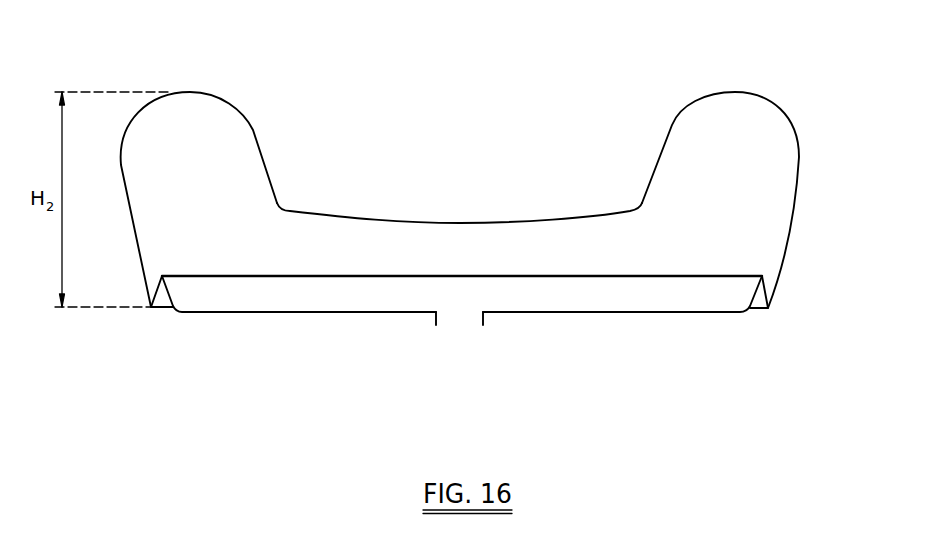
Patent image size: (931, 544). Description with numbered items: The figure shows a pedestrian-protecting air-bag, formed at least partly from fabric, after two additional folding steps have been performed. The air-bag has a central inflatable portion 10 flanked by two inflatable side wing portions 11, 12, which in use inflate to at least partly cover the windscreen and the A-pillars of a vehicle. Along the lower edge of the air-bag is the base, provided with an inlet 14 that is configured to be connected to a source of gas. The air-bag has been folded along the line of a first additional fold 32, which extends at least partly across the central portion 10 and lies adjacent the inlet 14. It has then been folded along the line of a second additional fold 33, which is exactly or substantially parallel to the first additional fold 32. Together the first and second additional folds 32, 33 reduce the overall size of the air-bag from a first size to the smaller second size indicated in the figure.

The central inflatable portion 10 is at (496, 241).
The inflatable side wing portion 11 is at (152, 125).
The inflatable side wing portion 12 is at (755, 137).
The inlet 14 is at (455, 310).
The first additional fold 32 is at (163, 310).
The second additional fold 33 is at (197, 272).